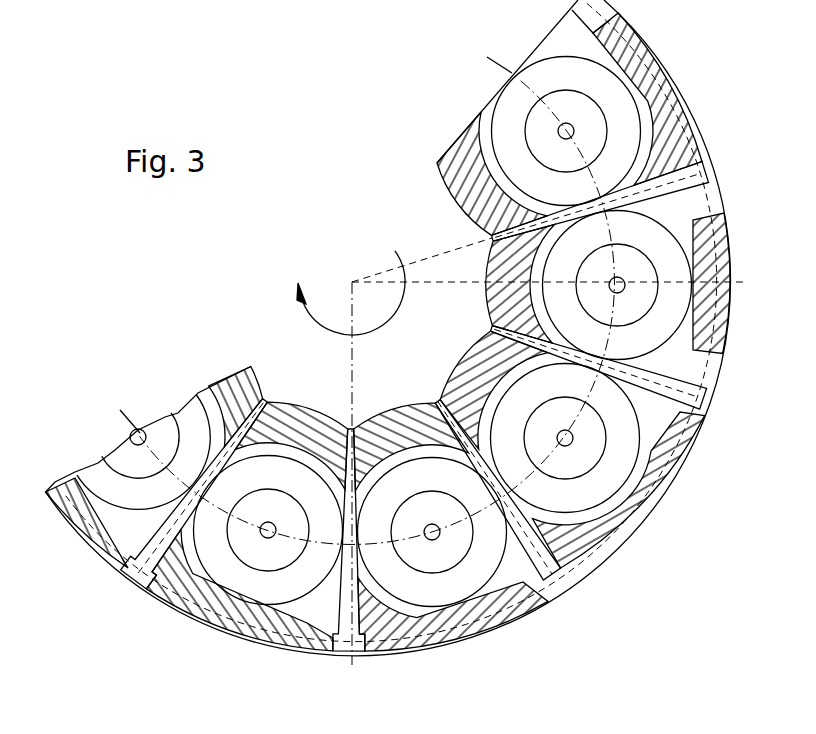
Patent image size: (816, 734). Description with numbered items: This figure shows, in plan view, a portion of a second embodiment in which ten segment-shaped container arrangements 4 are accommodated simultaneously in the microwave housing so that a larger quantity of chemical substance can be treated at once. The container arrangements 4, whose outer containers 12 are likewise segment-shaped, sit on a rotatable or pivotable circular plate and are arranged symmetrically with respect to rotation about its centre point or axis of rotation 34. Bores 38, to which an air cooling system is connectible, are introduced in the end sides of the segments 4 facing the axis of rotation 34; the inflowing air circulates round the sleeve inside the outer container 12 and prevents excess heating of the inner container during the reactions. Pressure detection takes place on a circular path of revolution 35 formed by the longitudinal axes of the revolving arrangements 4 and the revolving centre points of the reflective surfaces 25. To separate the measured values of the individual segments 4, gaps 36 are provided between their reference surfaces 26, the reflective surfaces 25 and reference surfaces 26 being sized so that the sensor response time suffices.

The container arrangement 4 is at (510, 625).
The outer container 12 is at (420, 628).
The reflective surface 25 is at (587, 466).
The reference surface 26 is at (633, 440).
The axis of rotation 34 is at (352, 280).
The circular path of revolution 35 is at (528, 94).
The gap 36 is at (688, 396).
The bore 38 is at (393, 404).